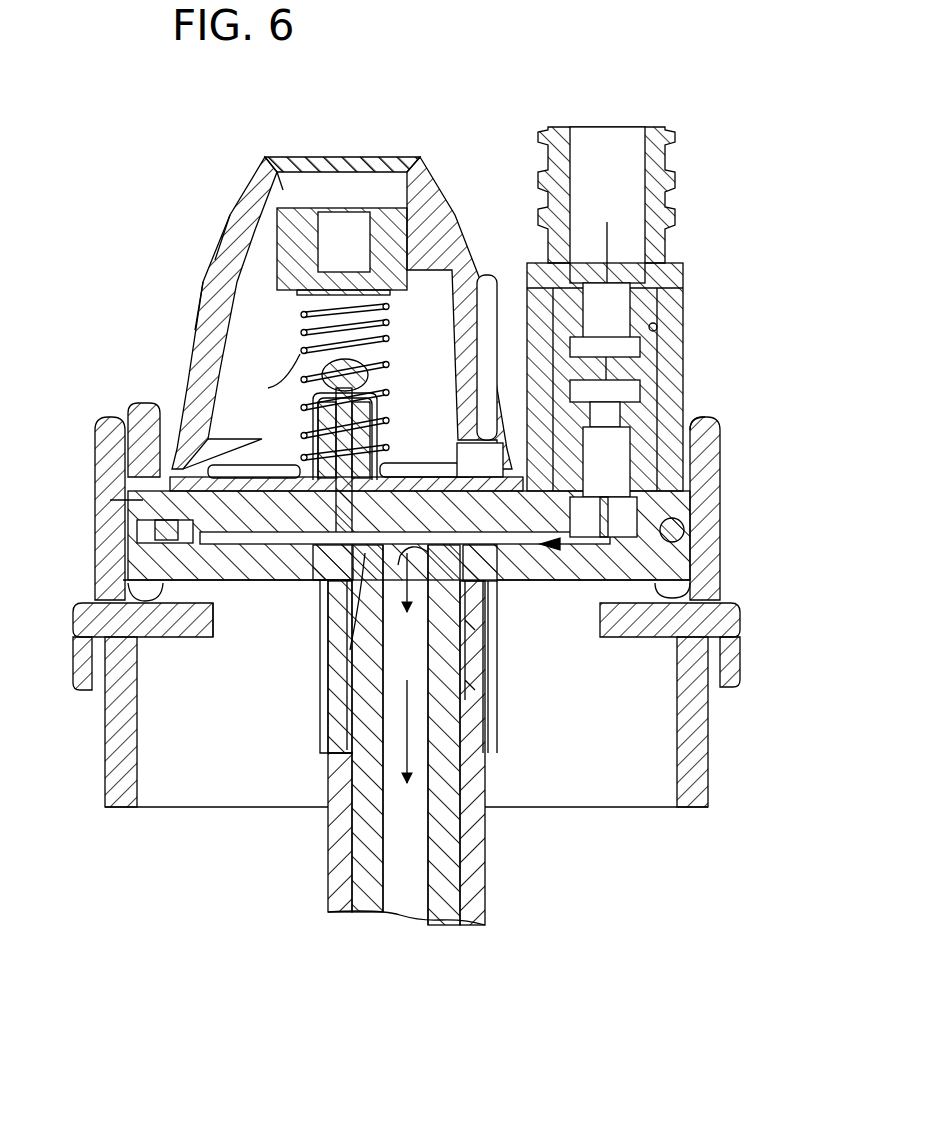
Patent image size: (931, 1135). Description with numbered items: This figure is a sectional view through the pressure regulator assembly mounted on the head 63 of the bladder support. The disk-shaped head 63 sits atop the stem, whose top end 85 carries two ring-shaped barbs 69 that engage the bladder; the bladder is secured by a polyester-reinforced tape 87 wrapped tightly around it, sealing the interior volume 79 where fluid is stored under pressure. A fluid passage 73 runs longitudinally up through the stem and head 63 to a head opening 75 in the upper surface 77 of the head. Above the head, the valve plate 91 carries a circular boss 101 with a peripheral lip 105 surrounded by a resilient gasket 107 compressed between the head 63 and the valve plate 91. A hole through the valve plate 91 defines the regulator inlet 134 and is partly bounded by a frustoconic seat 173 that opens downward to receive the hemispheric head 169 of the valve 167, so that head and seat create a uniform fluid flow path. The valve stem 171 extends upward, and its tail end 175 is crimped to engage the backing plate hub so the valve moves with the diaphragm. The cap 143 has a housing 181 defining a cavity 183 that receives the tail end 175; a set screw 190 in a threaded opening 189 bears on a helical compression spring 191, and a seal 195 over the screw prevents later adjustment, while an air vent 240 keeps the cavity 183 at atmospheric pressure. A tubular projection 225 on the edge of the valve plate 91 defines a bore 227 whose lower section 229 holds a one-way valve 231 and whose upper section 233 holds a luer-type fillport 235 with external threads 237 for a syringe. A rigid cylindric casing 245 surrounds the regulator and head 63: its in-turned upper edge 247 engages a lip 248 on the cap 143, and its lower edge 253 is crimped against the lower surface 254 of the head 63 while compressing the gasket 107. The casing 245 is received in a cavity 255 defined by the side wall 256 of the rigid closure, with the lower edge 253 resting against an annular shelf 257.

The threaded opening 189 is at (283, 190).
The seal 195 is at (300, 157).
The set screw 190 is at (390, 210).
The cap 143 is at (235, 218).
The housing 181 is at (205, 290).
The cavity 183 is at (283, 354).
The helical compression spring 191 is at (388, 330).
The tail end 175 is at (366, 385).
The valve 167 is at (372, 440).
The hemispheric head 169 is at (398, 470).
The valve stem 171 is at (298, 445).
The in-turned upper edge 247 is at (130, 407).
The lip 248 is at (165, 405).
The valve plate 91 is at (143, 502).
The peripheral lip 105 is at (150, 530).
The circular boss 101 is at (110, 550).
The casing 245 is at (125, 592).
The head 63 is at (210, 581).
The lower surface 254 is at (242, 582).
The frustoconic seat 173 is at (315, 545).
The inlet 134 is at (330, 680).
The tape 87 is at (320, 733).
The fluid passage 73 is at (385, 843).
The interior volume 79 is at (448, 912).
The barbs 69 is at (470, 700).
The top end 85 is at (482, 633).
The head opening 75 is at (470, 613).
The external threads 237 is at (673, 180).
The fillport 235 is at (687, 277).
The bore 227 is at (660, 310).
The tubular projection 225 is at (657, 328).
The upper section 233 is at (652, 347).
The cavity 255 is at (690, 400).
The one-way valve 231 is at (637, 440).
The lower section 229 is at (633, 487).
The upper surface 77 is at (695, 505).
The gasket 107 is at (684, 528).
The side wall 256 is at (717, 572).
The annular shelf 257 is at (657, 585).
The lower edge 253 is at (673, 605).
The air vent 240 is at (487, 313).